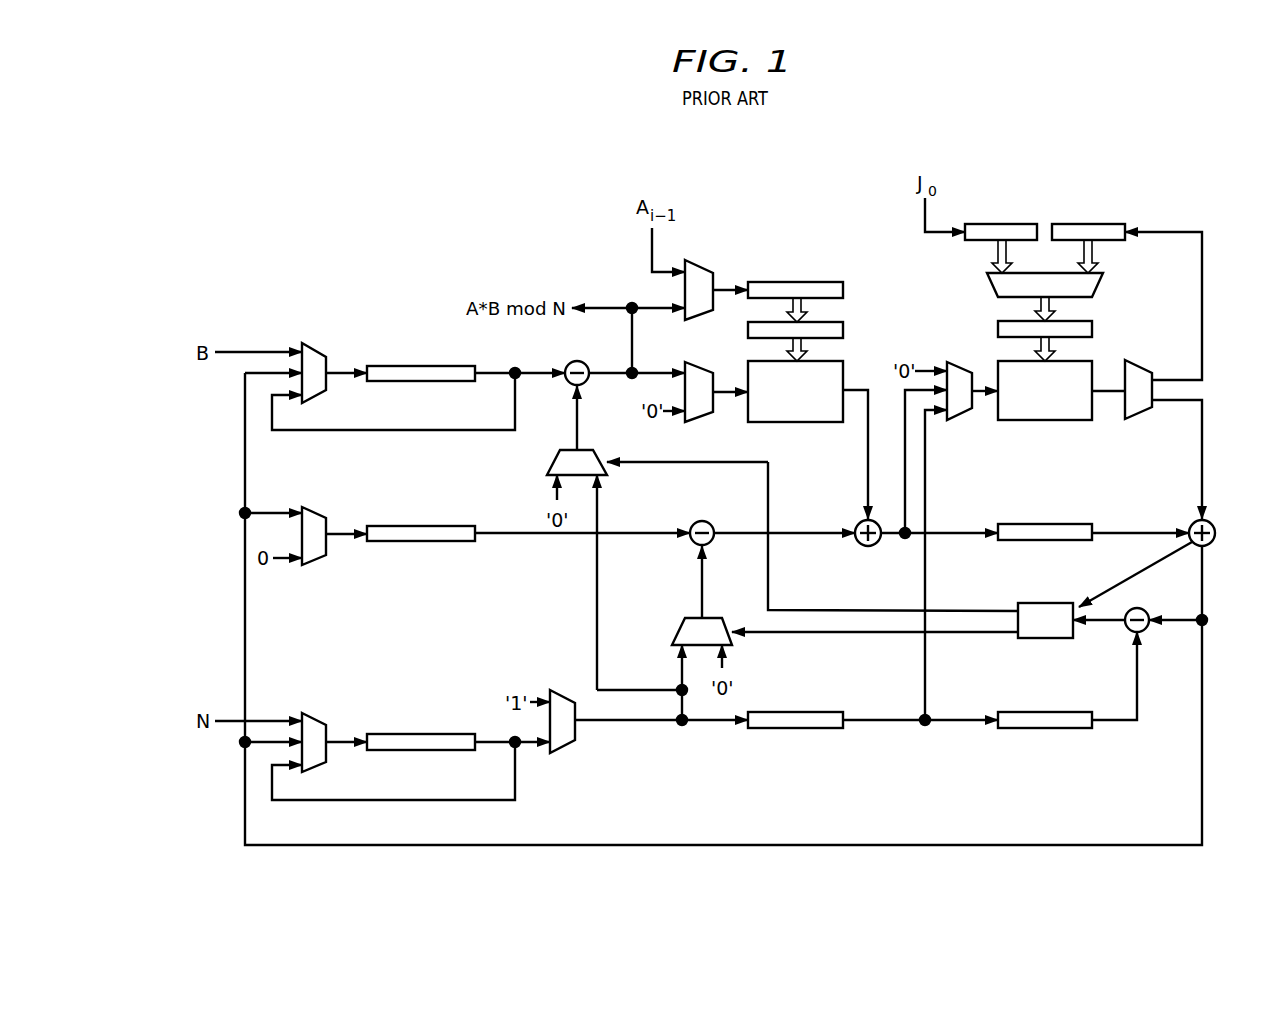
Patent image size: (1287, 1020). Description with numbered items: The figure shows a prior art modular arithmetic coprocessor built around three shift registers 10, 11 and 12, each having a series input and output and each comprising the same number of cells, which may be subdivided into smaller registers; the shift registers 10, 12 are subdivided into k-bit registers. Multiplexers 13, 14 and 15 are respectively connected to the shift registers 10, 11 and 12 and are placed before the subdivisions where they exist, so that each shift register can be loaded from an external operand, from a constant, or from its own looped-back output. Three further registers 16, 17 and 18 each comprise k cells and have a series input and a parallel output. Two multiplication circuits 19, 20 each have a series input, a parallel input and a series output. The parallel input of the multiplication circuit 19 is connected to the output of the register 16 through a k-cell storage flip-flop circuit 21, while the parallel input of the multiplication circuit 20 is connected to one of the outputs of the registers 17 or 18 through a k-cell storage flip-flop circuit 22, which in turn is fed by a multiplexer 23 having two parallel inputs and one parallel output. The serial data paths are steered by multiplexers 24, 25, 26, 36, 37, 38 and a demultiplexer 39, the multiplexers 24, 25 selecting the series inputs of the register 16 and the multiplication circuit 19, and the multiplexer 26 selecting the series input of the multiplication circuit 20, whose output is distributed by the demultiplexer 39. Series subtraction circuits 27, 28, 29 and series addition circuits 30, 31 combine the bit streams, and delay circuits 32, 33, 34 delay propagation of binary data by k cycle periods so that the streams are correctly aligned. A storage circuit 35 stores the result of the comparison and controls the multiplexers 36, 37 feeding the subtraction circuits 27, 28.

The shift register 10 is at (420, 363).
The shift register 11 is at (420, 525).
The shift register 12 is at (420, 732).
The multiplexer 13 is at (313, 340).
The multiplexer 14 is at (313, 505).
The multiplexer 15 is at (314, 712).
The register 16 is at (843, 288).
The register 17 is at (1002, 222).
The register 18 is at (1087, 222).
The multiplication circuit 19 is at (795, 423).
The multiplication circuit 20 is at (1045, 422).
The storage flip-flop circuit 21 is at (843, 330).
The storage flip-flop circuit 22 is at (1093, 329).
The multiplexer 23 is at (1103, 286).
The multiplexer 24 is at (697, 260).
The multiplexer 25 is at (697, 365).
The multiplexer 26 is at (957, 360).
The series subtraction circuit 27 is at (566, 364).
The series subtraction circuit 28 is at (714, 524).
The series subtraction circuit 29 is at (1148, 610).
The series addition circuit 30 is at (870, 547).
The series addition circuit 31 is at (1215, 531).
The delay circuit 32 is at (793, 732).
The delay circuit 33 is at (1043, 730).
The delay circuit 34 is at (1043, 543).
The storage circuit 35 is at (1043, 640).
The multiplexer 36 is at (552, 462).
The multiplexer 37 is at (676, 628).
The multiplexer 38 is at (562, 747).
The demultiplexer 39 is at (1137, 421).